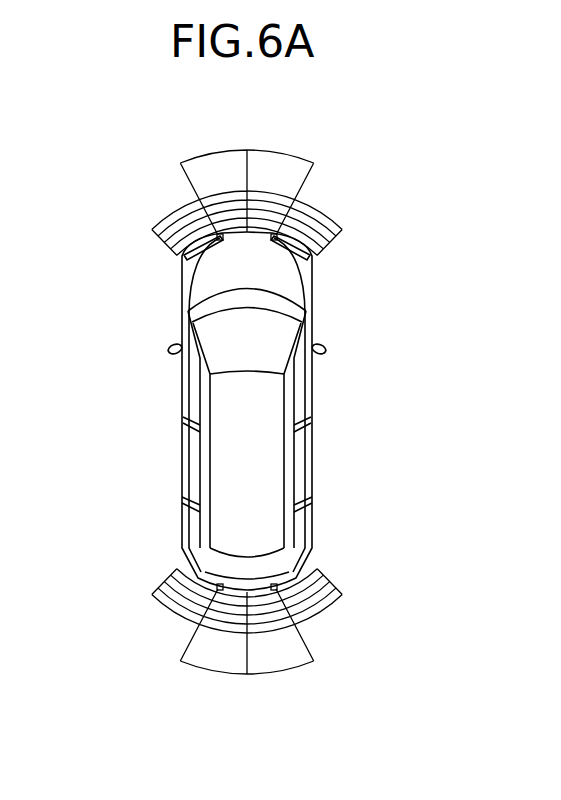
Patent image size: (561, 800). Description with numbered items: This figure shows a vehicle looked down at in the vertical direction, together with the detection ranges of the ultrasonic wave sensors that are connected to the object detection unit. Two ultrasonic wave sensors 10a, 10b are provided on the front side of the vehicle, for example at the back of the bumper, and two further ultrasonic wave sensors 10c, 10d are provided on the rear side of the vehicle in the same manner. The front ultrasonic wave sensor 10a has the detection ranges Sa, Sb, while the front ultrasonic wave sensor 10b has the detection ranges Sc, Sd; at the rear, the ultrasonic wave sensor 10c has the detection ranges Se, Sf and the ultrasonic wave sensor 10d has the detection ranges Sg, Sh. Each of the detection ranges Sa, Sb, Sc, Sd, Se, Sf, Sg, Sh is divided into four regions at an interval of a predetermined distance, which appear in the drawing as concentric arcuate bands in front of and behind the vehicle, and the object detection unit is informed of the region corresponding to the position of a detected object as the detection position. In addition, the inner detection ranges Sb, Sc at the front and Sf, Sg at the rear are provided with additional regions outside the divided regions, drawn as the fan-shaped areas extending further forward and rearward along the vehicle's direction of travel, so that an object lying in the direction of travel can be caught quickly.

The ultrasonic wave sensor 10a is at (217, 238).
The ultrasonic wave sensor 10b is at (278, 240).
The ultrasonic wave sensor 10c is at (218, 584).
The ultrasonic wave sensor 10d is at (278, 585).
The detection range Sa is at (167, 216).
The detection range Sb is at (218, 152).
The detection range Sc is at (276, 152).
The detection range Sd is at (327, 216).
The detection range Se is at (167, 608).
The detection range Sf is at (218, 672).
The detection range Sg is at (276, 672).
The detection range Sh is at (327, 608).